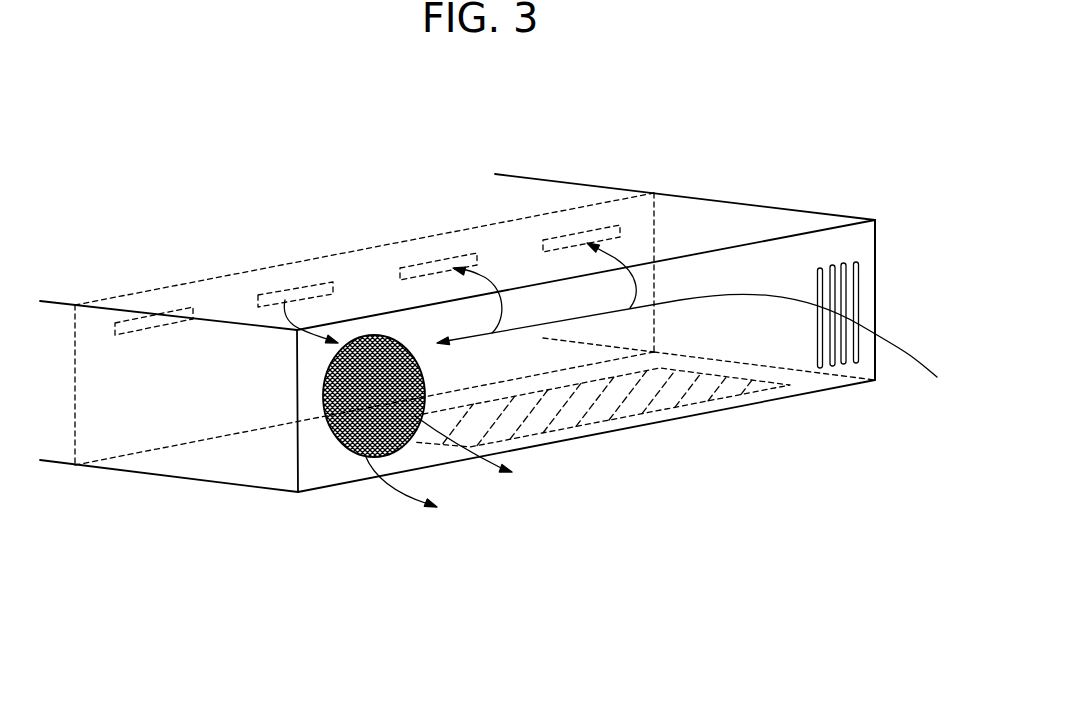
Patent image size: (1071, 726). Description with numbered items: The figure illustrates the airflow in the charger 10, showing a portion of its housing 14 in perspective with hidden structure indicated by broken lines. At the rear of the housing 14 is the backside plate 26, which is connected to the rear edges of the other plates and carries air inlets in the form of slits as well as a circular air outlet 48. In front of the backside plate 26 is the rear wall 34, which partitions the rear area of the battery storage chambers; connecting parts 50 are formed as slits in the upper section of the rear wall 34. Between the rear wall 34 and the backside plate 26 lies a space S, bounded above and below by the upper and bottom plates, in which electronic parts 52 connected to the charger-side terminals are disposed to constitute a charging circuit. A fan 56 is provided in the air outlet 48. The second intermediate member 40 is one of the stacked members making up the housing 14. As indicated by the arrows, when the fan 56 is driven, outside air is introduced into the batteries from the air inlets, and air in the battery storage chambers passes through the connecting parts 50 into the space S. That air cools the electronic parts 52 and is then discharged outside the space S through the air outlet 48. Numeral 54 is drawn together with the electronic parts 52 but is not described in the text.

The charger 10 is at (575, 156).
The housing 14 is at (692, 217).
The backside plate 26 is at (782, 268).
The rear wall 34 is at (237, 295).
The second intermediate member 40 is at (858, 276).
The air outlet 48 is at (350, 448).
The connecting parts 50 is at (545, 240).
The electronic parts 52 is at (601, 443).
The heat sink plate 54 is at (668, 396).
The fan 56 is at (322, 400).
The space S is at (120, 382).